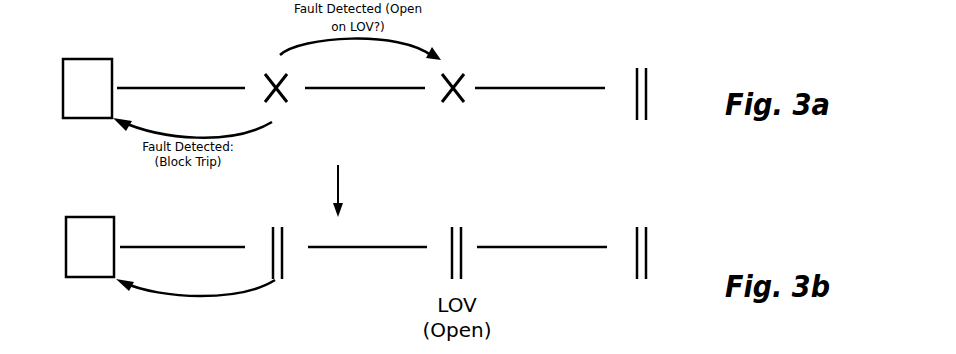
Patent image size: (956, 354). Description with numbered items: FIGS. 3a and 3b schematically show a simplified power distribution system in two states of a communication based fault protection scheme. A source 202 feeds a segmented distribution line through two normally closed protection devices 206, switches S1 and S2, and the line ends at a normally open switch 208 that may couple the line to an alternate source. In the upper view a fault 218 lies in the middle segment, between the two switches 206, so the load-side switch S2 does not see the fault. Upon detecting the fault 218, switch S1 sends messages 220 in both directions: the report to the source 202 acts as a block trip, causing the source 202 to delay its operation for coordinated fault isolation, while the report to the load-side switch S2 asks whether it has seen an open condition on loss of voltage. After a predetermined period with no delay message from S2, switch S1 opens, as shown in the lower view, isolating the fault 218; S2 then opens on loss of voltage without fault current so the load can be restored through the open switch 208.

In FIG. 3A, the source 202 is at (86, 59).
In FIG. 3B, the source 202 is at (86, 217).
In FIG. 3A, the protection devices 206 is at (268, 65).
In FIG. 3B, the protection devices 206 is at (280, 227).
In FIG. 3A, the open switch 208 is at (642, 66).
In FIG. 3B, the open switch 208 is at (642, 226).
In FIG. 3A, the fault 218 is at (388, 142).
In FIG. 3B, the fault 218 is at (343, 295).
In FIG. 3A, the messages 220 is at (134, 132).